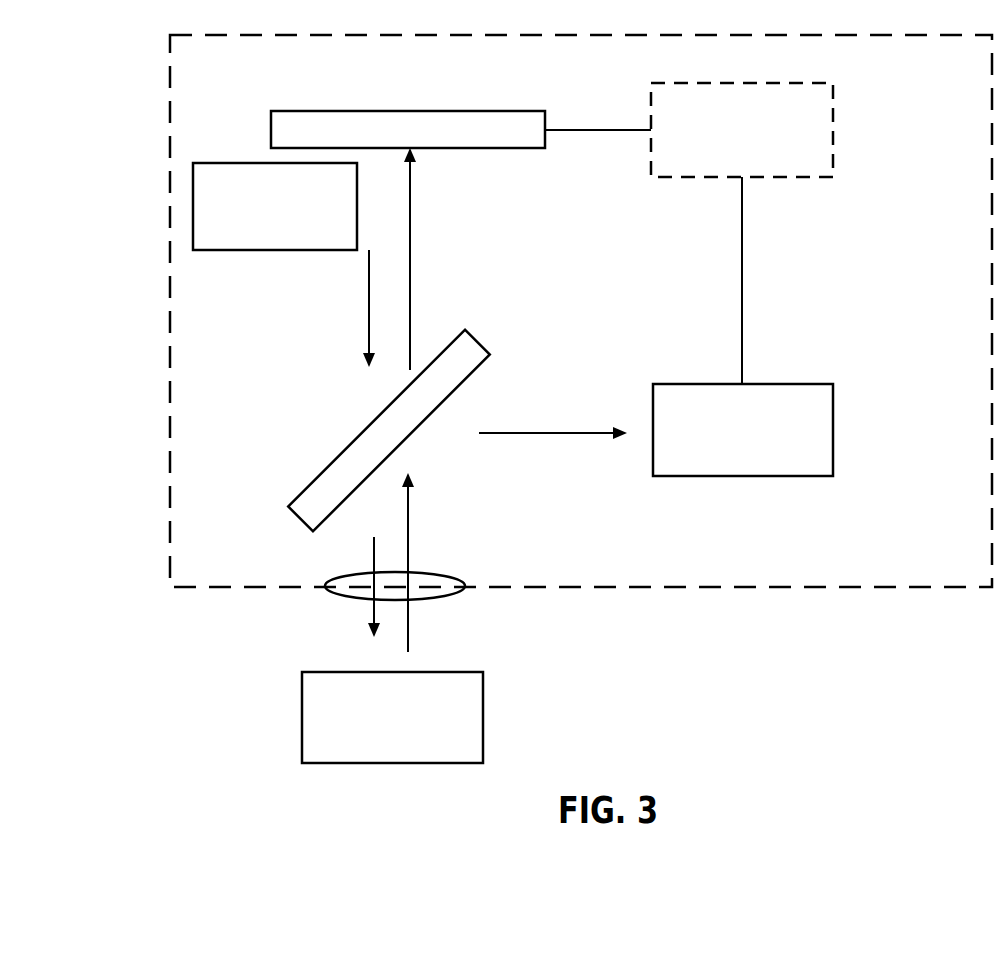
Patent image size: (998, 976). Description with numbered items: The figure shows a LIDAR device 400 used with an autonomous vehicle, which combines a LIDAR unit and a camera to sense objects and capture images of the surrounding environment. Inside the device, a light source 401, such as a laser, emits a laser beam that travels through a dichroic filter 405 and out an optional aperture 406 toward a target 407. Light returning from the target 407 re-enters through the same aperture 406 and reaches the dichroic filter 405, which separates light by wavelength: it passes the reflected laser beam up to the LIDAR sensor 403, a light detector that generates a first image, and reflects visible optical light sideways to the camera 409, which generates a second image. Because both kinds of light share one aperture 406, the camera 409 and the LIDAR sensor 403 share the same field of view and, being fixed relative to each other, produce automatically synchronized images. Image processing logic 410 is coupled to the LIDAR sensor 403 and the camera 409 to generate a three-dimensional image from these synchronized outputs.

The LIDAR device 400 is at (581, 311).
The light source 401 is at (295, 234).
The LIDAR sensor 403 is at (510, 142).
The dichroic filter 405 is at (457, 431).
The aperture 406 is at (332, 594).
The target 407 is at (413, 742).
The camera 409 is at (763, 456).
The image processing logic 410 is at (797, 172).